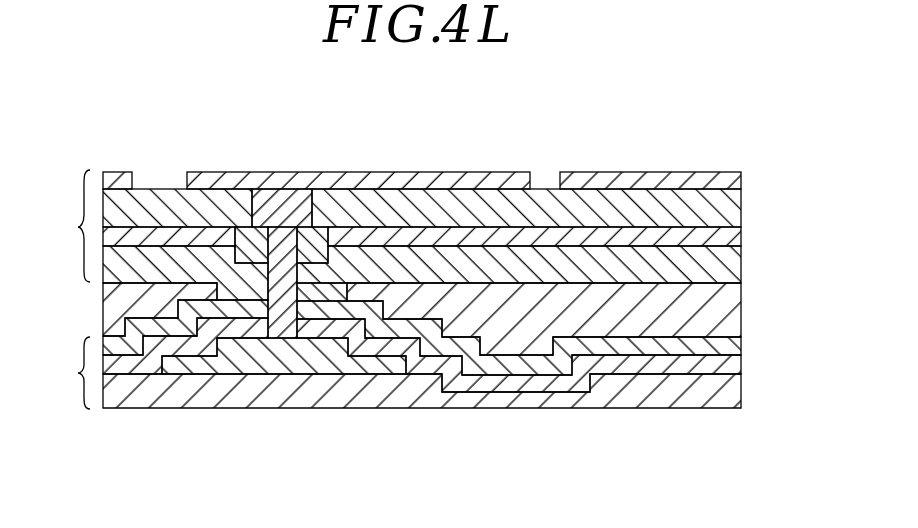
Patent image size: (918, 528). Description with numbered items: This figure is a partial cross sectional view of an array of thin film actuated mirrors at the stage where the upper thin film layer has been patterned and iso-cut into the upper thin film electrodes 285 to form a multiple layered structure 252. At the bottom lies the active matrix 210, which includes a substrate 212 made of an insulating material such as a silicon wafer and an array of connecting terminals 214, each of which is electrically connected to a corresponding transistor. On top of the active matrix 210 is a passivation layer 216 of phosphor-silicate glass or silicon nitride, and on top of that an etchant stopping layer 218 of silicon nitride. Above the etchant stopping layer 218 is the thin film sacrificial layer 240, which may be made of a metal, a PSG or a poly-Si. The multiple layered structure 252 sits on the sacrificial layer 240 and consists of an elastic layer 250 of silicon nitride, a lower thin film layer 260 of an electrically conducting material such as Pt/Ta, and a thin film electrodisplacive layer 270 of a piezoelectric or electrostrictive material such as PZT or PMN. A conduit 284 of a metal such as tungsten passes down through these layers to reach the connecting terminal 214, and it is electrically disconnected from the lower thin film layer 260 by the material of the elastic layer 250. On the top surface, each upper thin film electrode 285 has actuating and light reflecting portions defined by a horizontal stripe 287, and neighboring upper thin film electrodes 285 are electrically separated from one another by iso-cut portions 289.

The active matrix 210 is at (55, 373).
The substrate 212 is at (727, 399).
The connecting terminal 214 is at (277, 357).
The passivation layer 216 is at (723, 366).
The etchant stopping layer 218 is at (727, 347).
The thin film sacrificial layer 240 is at (720, 312).
The elastic layer 250 is at (730, 263).
The multiple layered structure 252 is at (55, 226).
The lower thin film layer 260 is at (729, 237).
The thin film electrodisplacive layer 270 is at (729, 205).
The conduit 284 is at (283, 203).
The upper thin film electrode 285 is at (690, 179).
The horizontal stripe 287 is at (545, 176).
The iso-cut portion 289 is at (161, 176).